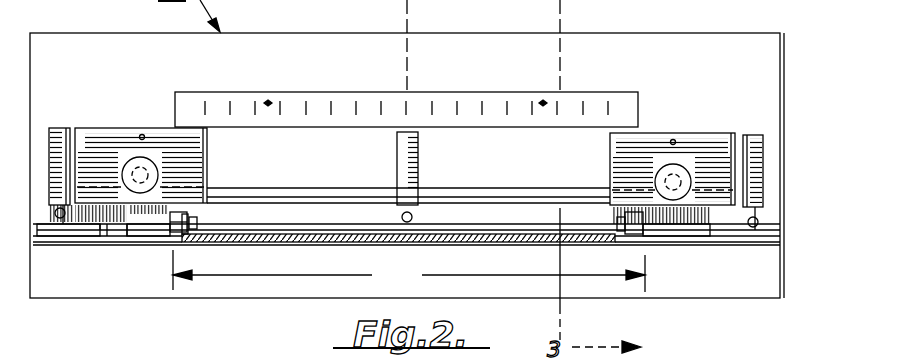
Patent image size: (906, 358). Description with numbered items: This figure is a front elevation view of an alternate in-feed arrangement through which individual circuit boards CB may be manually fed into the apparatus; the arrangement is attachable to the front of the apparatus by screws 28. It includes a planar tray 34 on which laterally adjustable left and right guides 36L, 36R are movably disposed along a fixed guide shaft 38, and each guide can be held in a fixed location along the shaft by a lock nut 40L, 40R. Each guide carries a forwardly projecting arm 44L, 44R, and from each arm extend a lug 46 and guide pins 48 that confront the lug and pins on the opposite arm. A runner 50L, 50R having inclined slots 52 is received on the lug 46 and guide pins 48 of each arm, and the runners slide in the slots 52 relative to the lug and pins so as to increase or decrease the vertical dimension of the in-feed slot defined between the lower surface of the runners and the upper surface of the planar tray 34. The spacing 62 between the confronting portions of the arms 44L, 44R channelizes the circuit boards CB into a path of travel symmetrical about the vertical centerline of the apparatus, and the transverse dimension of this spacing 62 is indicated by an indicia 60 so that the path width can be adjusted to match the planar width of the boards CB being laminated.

The screws 28 is at (65, 226).
The planar tray 34 is at (92, 237).
The left guide 36L is at (98, 148).
The right guide 36R is at (722, 150).
The fixed guide shaft 38 is at (353, 203).
The left lock nut 40L is at (150, 167).
The right lock nut 40R is at (693, 165).
The left forwardly projecting arm 44L is at (135, 238).
The right forwardly projecting arm 44R is at (692, 238).
The lug 46 is at (604, 262).
The guide pins 48 is at (178, 214).
The left runner 50L is at (184, 222).
The right runner 50R is at (655, 228).
The inclined slots 52 is at (196, 218).
The indicia 60 is at (297, 108).
The spacing 62 is at (409, 271).
The circuit boards CB is at (342, 238).